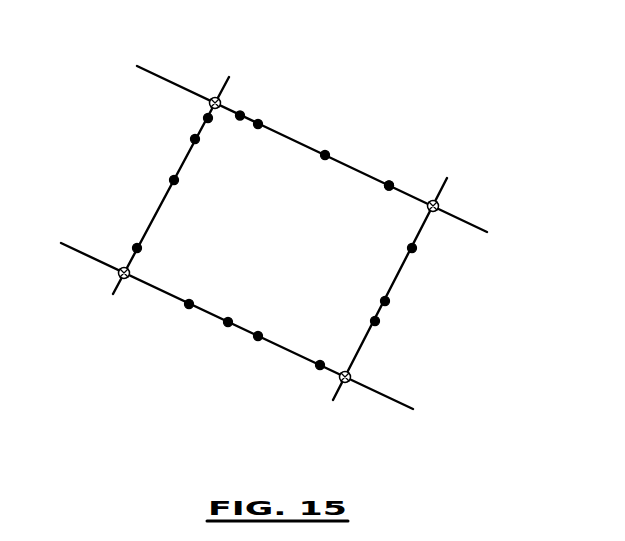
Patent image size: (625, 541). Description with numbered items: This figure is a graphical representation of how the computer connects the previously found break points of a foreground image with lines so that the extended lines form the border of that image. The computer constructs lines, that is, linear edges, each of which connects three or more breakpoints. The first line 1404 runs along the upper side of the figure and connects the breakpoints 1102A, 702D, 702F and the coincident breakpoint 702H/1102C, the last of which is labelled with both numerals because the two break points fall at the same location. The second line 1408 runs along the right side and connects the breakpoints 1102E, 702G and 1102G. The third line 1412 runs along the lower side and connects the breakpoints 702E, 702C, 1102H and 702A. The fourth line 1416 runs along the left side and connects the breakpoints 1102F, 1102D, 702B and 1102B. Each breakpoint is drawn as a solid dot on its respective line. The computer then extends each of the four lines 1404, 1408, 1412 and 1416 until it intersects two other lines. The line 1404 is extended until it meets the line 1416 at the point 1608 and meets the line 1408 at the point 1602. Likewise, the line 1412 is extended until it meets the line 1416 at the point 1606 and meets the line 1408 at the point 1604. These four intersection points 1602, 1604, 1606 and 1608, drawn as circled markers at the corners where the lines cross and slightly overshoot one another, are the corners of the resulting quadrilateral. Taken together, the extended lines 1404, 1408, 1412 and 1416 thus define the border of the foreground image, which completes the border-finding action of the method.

The line 1404 is at (347, 162).
The line 1408 is at (403, 270).
The line 1412 is at (240, 330).
The line 1416 is at (187, 157).
The intersection point 1602 is at (433, 206).
The intersection point 1604 is at (345, 377).
The intersection point 1606 is at (124, 273).
The intersection point 1608 is at (215, 103).
The breakpoint 702A is at (189, 304).
The breakpoint 702B is at (195, 139).
The breakpoint 702C is at (258, 336).
The breakpoint 702D is at (258, 124).
The breakpoint 702E is at (320, 365).
The breakpoint 702F is at (325, 155).
The breakpoint 702G is at (385, 301).
The breakpoint 702H is at (389, 186).
The breakpoint 1102A is at (240, 116).
The breakpoint 1102B is at (208, 118).
The breakpoint 1102C is at (389, 185).
The breakpoint 1102D is at (174, 180).
The breakpoint 1102E is at (412, 248).
The breakpoint 1102F is at (137, 248).
The breakpoint 1102G is at (375, 321).
The breakpoint 1102H is at (228, 322).